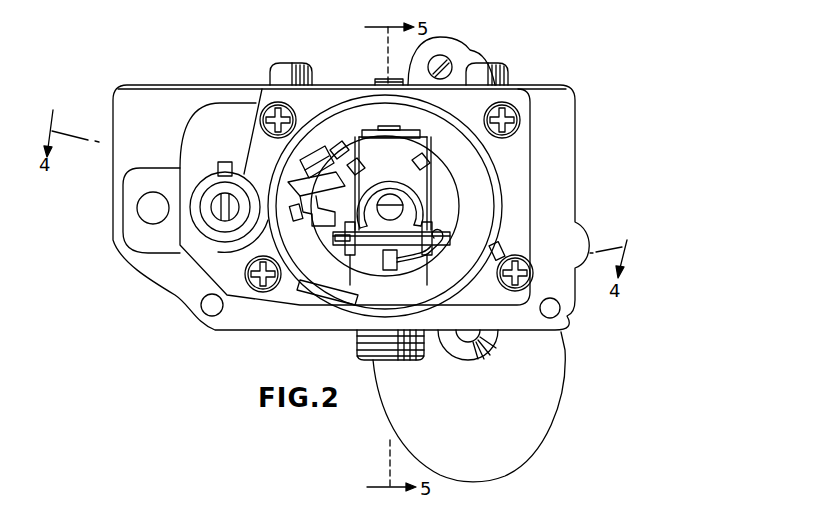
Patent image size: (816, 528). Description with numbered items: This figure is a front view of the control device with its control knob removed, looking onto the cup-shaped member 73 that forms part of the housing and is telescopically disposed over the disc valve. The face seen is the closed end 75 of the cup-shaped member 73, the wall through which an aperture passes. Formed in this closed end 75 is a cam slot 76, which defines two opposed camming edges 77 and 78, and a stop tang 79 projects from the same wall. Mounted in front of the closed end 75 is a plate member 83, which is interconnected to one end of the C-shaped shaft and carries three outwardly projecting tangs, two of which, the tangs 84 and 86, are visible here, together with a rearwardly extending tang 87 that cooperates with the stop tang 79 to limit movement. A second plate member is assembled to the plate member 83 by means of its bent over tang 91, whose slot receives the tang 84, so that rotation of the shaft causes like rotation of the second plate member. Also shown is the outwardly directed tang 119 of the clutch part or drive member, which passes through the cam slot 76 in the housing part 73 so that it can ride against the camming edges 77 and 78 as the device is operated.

The cup-shaped member 73 is at (503, 190).
The closed end 75 is at (468, 170).
The cam slot 76 is at (339, 300).
The camming edge 77 is at (322, 292).
The camming edge 78 is at (294, 216).
The stop tang 79 is at (342, 135).
The plate member 83 is at (423, 272).
The outwardly projecting tang 84 is at (393, 130).
The outwardly projecting tang 86 is at (304, 168).
The rearwardly extending tang 87 is at (306, 210).
The bent over tang 91 is at (410, 135).
The outwardly directed tang 119 is at (313, 152).